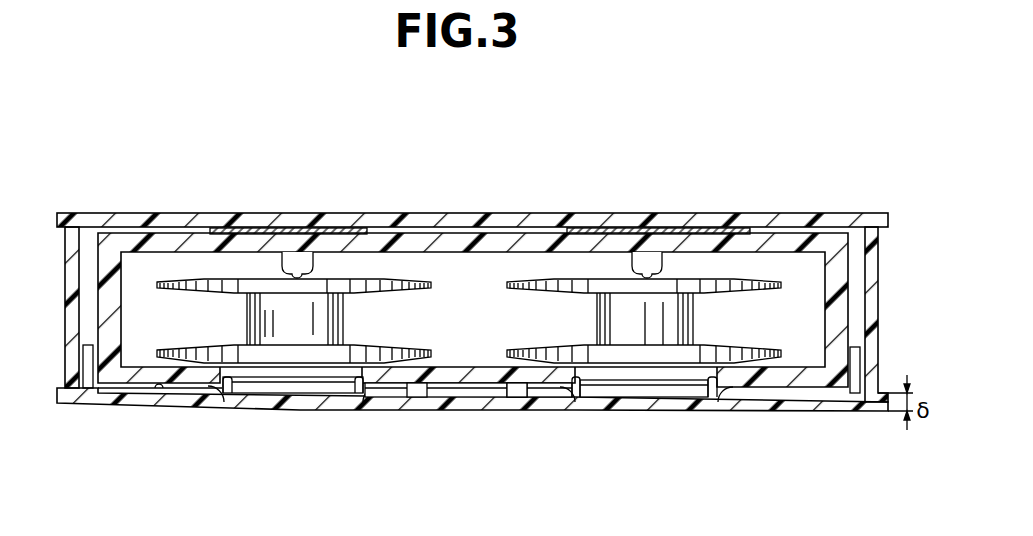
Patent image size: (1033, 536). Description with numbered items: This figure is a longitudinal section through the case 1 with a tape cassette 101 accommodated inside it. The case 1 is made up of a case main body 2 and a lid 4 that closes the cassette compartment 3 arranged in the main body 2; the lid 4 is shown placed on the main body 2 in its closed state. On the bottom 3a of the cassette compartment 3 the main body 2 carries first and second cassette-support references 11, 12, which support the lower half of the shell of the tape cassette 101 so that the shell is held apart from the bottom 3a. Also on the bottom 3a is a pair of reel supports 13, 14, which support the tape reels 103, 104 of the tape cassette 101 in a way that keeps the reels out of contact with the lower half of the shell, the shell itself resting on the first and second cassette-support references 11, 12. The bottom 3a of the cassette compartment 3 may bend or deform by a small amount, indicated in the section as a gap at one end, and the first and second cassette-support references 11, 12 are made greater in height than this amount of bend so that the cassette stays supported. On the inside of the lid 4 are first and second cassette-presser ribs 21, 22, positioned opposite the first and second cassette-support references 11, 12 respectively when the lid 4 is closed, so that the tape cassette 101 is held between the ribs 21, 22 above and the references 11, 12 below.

The case 1 is at (42, 140).
The main body 2 is at (78, 410).
The cassette compartment 3 is at (108, 392).
The bottom 3a is at (157, 392).
The lid 4 is at (100, 206).
The first cassette-support reference 11 is at (425, 390).
The second cassette-support reference 12 is at (510, 392).
The reel support 13 is at (213, 394).
The reel support 14 is at (577, 398).
The first cassette-presser rib 21 is at (263, 230).
The second cassette-presser rib 22 is at (648, 230).
The tape cassette 101 is at (167, 235).
The reel 103 is at (238, 321).
The reel 104 is at (583, 322).